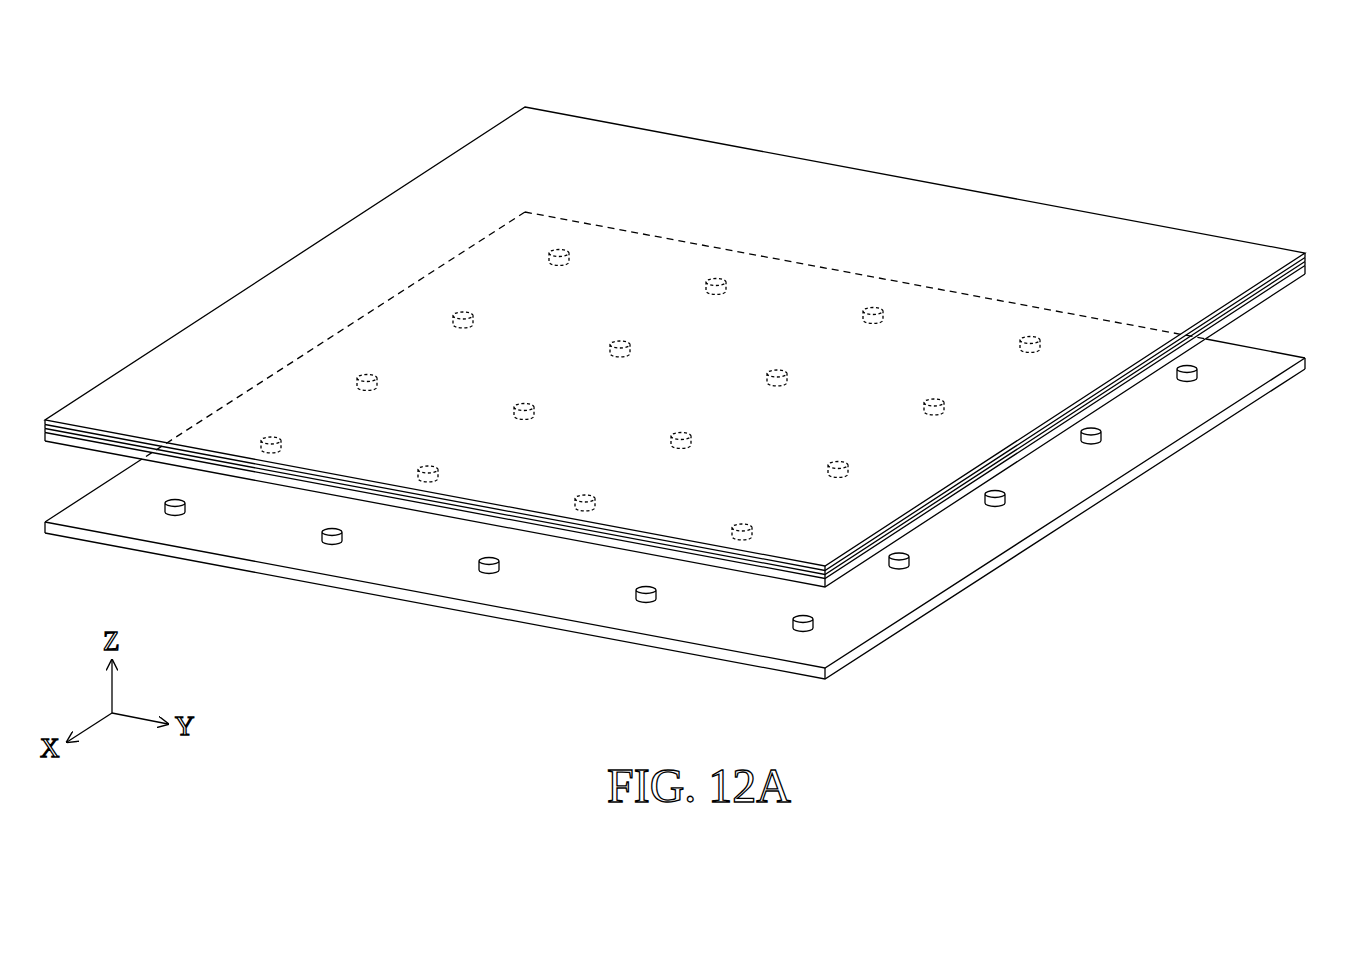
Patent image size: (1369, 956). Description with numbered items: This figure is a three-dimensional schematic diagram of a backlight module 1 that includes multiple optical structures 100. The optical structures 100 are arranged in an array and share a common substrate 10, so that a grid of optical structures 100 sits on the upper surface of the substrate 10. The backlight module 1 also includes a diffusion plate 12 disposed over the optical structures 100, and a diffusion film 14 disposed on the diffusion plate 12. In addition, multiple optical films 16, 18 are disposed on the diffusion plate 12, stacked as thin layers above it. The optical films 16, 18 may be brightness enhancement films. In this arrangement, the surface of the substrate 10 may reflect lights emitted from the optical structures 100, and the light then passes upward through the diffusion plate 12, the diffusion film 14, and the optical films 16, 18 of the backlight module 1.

The backlight module 1 is at (130, 95).
The substrate 10 is at (967, 550).
The optical structure 100 is at (1197, 382).
The diffusion plate 12 is at (1255, 305).
The diffusion film 14 is at (1288, 276).
The optical film 16 is at (1305, 259).
The optical film 18 is at (1293, 253).